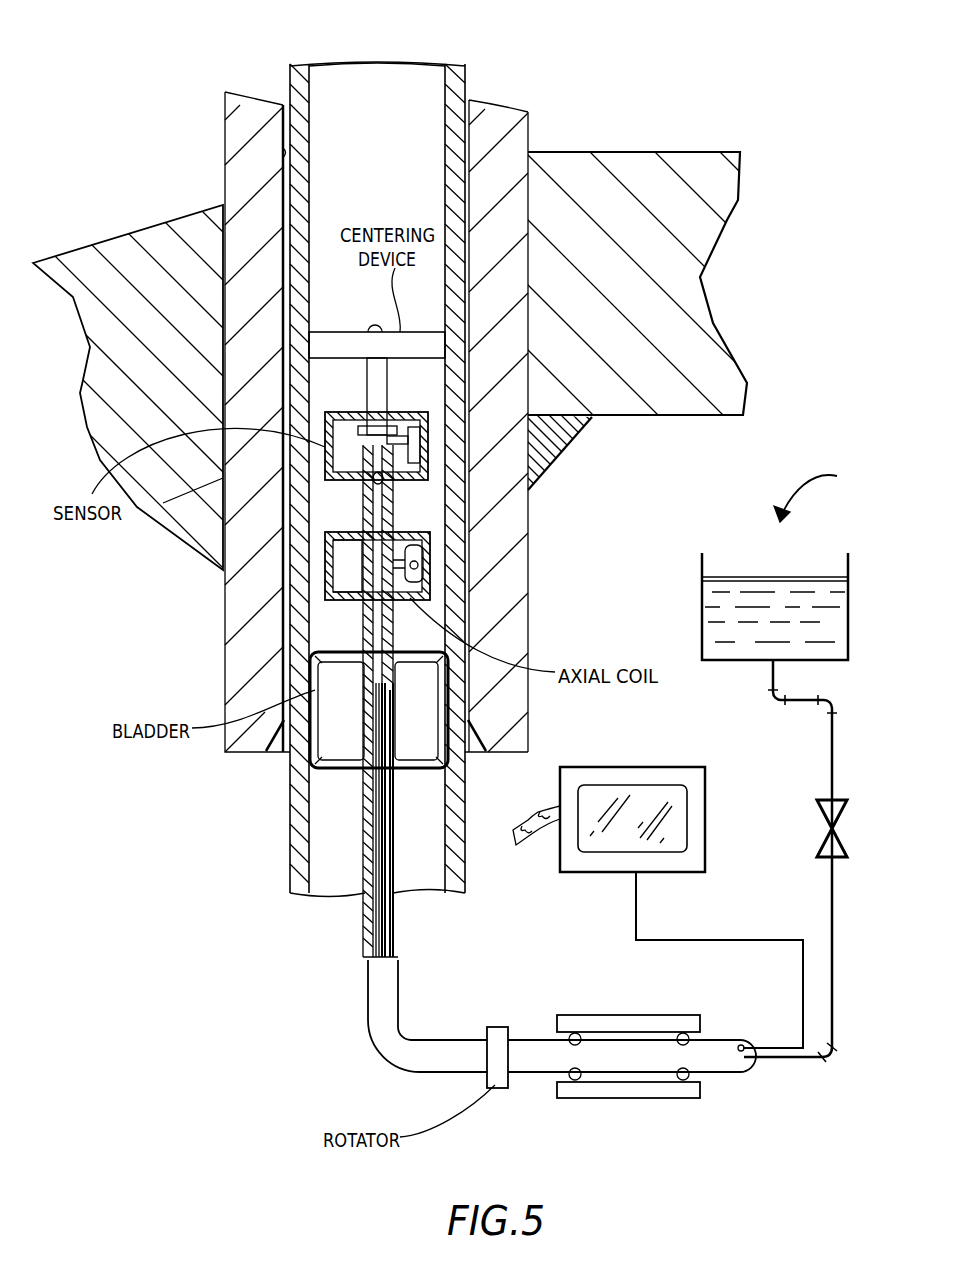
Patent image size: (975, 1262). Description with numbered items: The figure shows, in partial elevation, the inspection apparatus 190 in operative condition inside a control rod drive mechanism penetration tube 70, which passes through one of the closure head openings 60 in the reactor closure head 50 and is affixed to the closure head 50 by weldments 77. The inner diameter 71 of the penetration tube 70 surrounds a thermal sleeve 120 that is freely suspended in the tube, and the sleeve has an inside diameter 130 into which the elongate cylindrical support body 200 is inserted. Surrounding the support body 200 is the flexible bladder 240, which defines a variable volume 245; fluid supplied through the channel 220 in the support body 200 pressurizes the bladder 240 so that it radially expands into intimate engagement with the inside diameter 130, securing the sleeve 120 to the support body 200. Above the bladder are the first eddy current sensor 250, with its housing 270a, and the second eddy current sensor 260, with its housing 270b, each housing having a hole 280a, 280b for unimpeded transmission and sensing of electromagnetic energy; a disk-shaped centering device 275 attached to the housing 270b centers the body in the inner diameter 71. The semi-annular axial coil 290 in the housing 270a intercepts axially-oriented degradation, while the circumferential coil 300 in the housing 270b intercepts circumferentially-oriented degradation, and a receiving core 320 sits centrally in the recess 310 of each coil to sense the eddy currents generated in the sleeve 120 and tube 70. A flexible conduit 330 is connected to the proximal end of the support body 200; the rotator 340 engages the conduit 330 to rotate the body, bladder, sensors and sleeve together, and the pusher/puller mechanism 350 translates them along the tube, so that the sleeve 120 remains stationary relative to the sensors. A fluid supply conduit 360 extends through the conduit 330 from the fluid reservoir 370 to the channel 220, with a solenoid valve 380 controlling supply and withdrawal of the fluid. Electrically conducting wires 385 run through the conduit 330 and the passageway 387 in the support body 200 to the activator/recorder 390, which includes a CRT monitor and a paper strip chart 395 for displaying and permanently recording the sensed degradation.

The closure head 50 is at (615, 205).
The closure head openings 60 is at (223, 207).
The penetration tube 70 is at (245, 125).
The inner diameter 71 is at (282, 152).
The weldments 77 is at (556, 432).
The thermal sleeve 120 is at (297, 90).
The inside diameter 130 is at (306, 82).
The apparatus 190 is at (878, 491).
The support body 200 is at (365, 913).
The channel 220 is at (395, 925).
The bladder 240 is at (290, 641).
The variable volume 245 is at (345, 752).
The first eddy current sensor 250 is at (330, 572).
The second eddy current sensor 260 is at (355, 420).
The housing 270a is at (345, 600).
The housing 270b is at (363, 478).
The centering device 275 is at (338, 332).
The hole 280a is at (408, 548).
The hole 280b is at (437, 430).
The axial coil 290 is at (403, 592).
The circumferential coil 300 is at (413, 448).
The recess 310 is at (433, 560).
The receiving core 320 is at (423, 572).
The flexible conduit 330 is at (385, 1048).
The rotator 340 is at (497, 1027).
The pusher/puller mechanism 350 is at (595, 1015).
The fluid supply conduit 360 is at (833, 738).
The fluid reservoir 370 is at (702, 595).
The solenoid valve 380 is at (845, 818).
The electrically conducting wires 385 is at (374, 953).
The passageway 387 is at (377, 480).
The activator/recorder 390 is at (705, 838).
The paper strip chart 395 is at (530, 820).